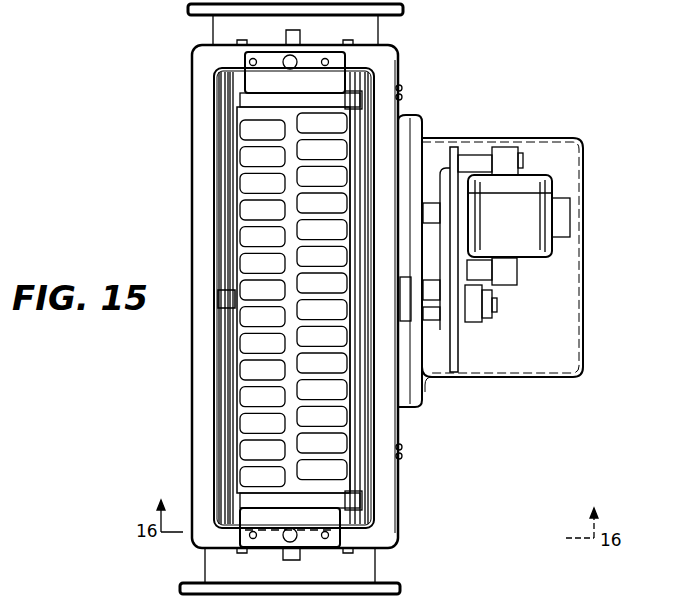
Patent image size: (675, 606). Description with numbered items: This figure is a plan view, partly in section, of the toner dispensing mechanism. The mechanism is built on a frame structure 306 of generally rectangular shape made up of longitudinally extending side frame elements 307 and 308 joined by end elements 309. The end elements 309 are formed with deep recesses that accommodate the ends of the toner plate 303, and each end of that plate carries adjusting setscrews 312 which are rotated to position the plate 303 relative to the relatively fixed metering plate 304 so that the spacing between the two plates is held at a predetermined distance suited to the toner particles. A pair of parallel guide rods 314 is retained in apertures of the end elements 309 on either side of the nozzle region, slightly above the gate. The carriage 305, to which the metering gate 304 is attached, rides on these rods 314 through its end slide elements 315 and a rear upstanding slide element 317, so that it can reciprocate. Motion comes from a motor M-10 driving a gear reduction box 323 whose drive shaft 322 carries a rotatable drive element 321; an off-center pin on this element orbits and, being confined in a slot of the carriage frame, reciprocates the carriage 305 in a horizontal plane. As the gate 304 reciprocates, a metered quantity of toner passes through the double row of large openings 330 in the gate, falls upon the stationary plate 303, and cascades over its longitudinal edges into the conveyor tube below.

The toner plate 303 is at (250, 423).
The metering plate 304 is at (250, 380).
The carriage 305 is at (218, 348).
The frame structure 306 is at (193, 325).
The side frame element 307 is at (390, 447).
The side frame element 308 is at (200, 255).
The end element 309 is at (367, 58).
The adjusting setscrew 312 is at (252, 549).
The guide rod 314 is at (227, 138).
The end slide element 315 is at (365, 101).
The rear upstanding slide element 317 is at (218, 296).
The rotatable drive element 321 is at (400, 263).
The drive shaft 322 is at (428, 380).
The gear reduction box 323 is at (460, 341).
The large openings 330 is at (243, 235).
The motor M-10 is at (545, 181).